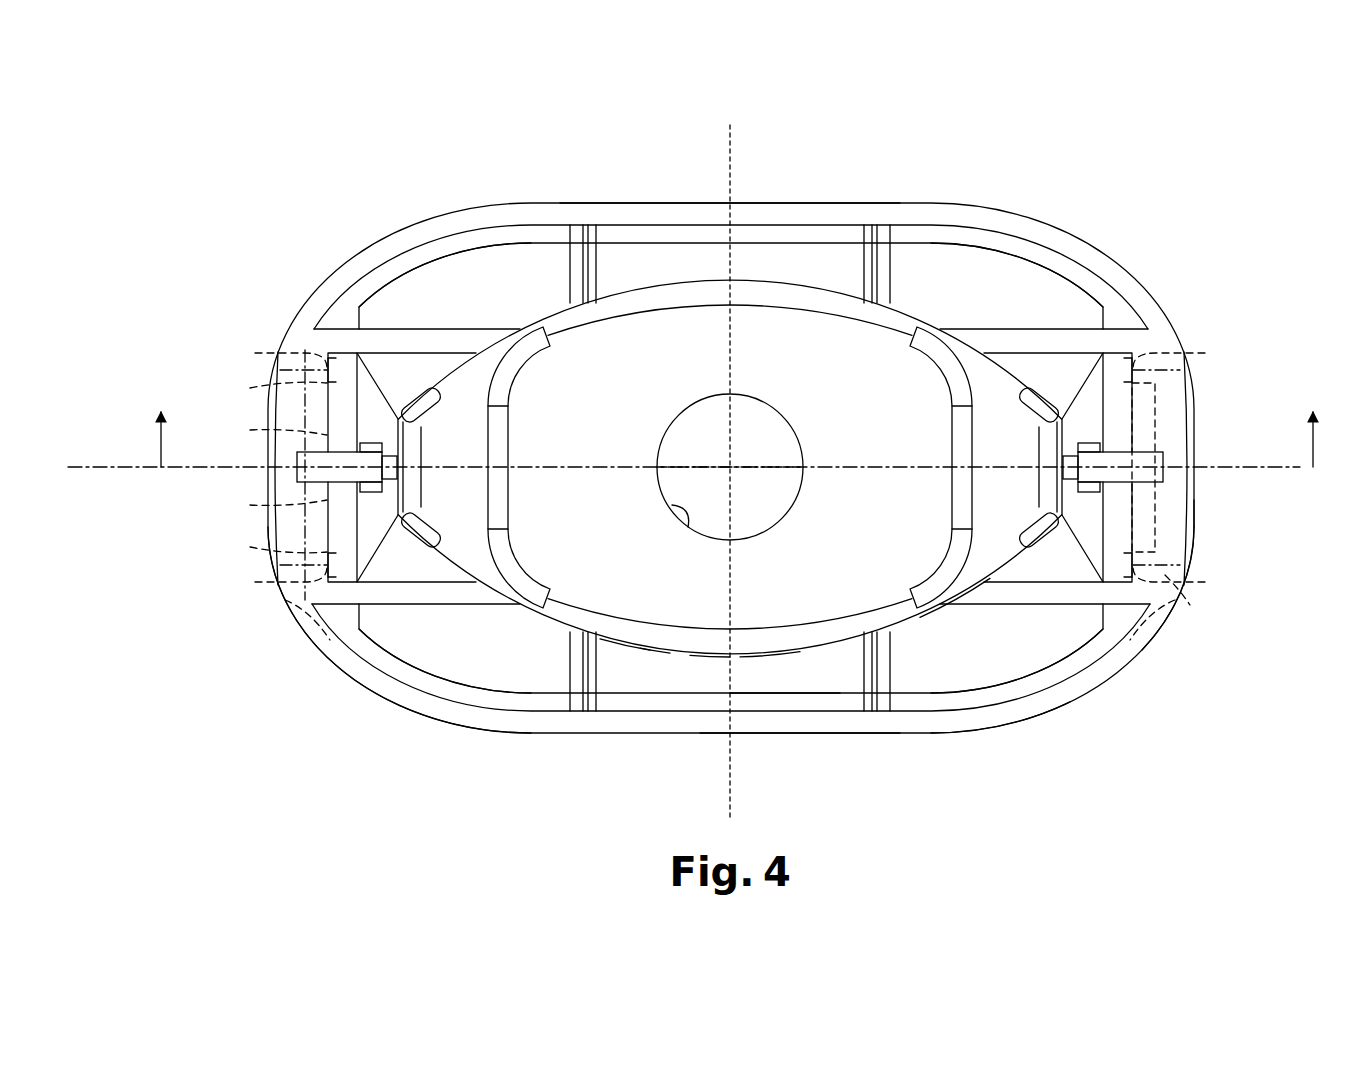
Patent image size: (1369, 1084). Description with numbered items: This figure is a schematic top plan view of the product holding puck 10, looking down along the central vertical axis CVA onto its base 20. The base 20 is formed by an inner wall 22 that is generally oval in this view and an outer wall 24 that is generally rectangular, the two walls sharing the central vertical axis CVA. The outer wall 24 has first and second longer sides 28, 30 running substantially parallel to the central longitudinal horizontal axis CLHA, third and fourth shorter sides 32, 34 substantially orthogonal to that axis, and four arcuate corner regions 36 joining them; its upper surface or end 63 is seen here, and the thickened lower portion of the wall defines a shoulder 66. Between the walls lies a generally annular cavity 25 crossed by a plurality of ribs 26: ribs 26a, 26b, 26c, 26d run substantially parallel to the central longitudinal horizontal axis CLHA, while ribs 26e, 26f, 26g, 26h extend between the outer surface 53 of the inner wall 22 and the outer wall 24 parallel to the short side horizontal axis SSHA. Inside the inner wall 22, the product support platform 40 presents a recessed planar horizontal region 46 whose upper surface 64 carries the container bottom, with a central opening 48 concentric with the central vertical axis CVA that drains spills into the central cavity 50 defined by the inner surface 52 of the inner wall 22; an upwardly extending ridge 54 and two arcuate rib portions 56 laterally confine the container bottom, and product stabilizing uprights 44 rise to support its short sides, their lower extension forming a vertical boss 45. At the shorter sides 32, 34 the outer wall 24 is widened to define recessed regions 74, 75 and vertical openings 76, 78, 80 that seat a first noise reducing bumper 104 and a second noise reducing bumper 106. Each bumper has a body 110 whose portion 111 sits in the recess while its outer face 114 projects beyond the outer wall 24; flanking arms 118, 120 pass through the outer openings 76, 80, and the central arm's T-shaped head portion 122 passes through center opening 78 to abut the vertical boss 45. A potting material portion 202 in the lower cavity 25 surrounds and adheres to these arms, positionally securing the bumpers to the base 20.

The product holding puck 10 is at (711, 483).
The base 20 is at (1194, 316).
The inner wall 22 is at (655, 640).
The outer wall 24 is at (433, 712).
The annular cavity 25 is at (812, 672).
The ribs 26 is at (565, 668).
The rib 26a is at (1030, 675).
The rib 26b is at (1055, 335).
The rib 26c is at (380, 680).
The rib 26d is at (432, 343).
The rib 26e is at (905, 683).
The rib 26f is at (580, 675).
The rib 26g is at (885, 270).
The rib 26h is at (598, 255).
The first longer side 28 is at (795, 725).
The second longer side 30 is at (836, 212).
The third shorter side 32 is at (1175, 577).
The fourth shorter side 34 is at (273, 580).
The arcuate corner regions 36 is at (352, 270).
The product support platform 40 is at (620, 570).
The product stabilizing uprights 44 is at (400, 404).
The vertical boss 45 is at (412, 467).
The recessed planar horizontal region 46 is at (824, 574).
The central opening 48 is at (683, 527).
The central cavity 50 is at (757, 440).
The inner surface 52 is at (636, 640).
The outer surface 53 is at (700, 655).
The ridge 54 is at (752, 645).
The arcuate rib portions 56 is at (982, 330).
The upper surface or end 63 is at (318, 625).
The upper surface 64 is at (557, 524).
The shoulder 66 is at (1005, 705).
The recessed region 74 is at (1214, 540).
The recessed region 75 is at (277, 537).
The vertical opening 76 is at (262, 477).
The center vertical opening 78 is at (268, 385).
The vertical opening 80 is at (340, 540).
The first noise reducing bumper 104 is at (1215, 553).
The second noise reducing bumper 106 is at (260, 517).
The body 110 is at (278, 493).
The portion of the body 111 is at (260, 550).
The outer face 114 is at (1167, 512).
The arm 118 is at (293, 617).
The arm 120 is at (300, 355).
The T-shaped head portion 122 is at (300, 430).
The potting material portion 202 is at (955, 668).
The central longitudinal horizontal axis CLHA is at (118, 464).
The central vertical axis CVA is at (728, 465).
The short side horizontal axis SSHA is at (735, 815).